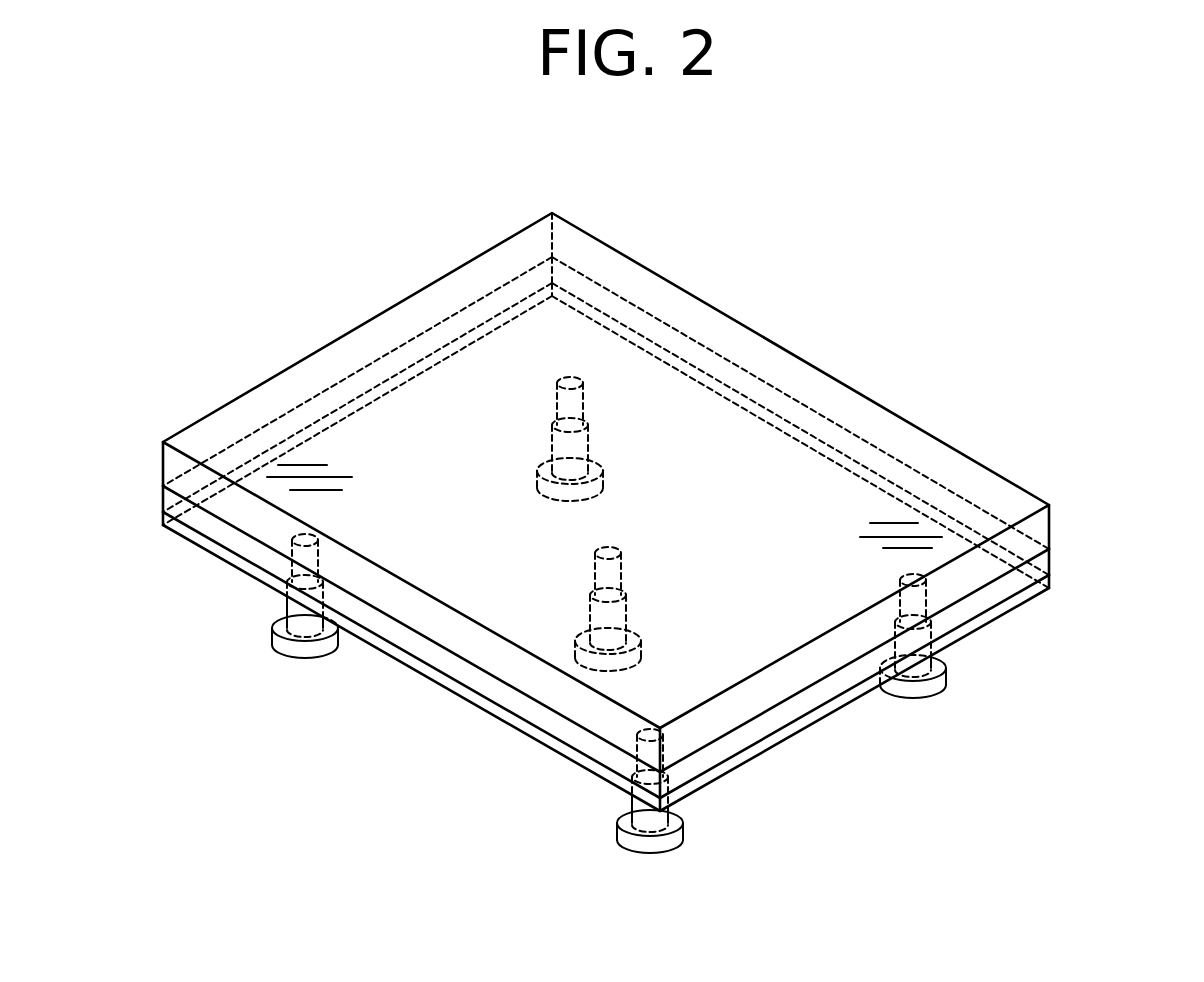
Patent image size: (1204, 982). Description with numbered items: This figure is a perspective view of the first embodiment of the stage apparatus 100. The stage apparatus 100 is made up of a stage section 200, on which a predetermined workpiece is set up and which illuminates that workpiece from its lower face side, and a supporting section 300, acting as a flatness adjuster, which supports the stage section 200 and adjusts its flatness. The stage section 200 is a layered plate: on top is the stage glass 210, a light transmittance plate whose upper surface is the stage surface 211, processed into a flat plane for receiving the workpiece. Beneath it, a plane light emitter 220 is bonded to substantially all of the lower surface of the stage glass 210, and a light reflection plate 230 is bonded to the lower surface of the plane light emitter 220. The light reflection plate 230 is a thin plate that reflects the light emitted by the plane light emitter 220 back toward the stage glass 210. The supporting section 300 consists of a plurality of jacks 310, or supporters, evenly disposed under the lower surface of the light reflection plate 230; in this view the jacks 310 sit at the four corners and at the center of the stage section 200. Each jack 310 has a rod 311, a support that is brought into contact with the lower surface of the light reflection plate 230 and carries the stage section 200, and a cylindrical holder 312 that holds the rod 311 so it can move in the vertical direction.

The stage apparatus 100 is at (1050, 344).
The stage section 200 is at (1082, 534).
The stage glass 210 is at (1050, 524).
The stage surface 211 is at (992, 487).
The plane light emitter 220 is at (1051, 560).
The light reflection plate 230 is at (1044, 594).
The supporting section 300 is at (966, 678).
The jack 310 is at (286, 684).
The rod 311 is at (633, 779).
The cylindrical holder 312 is at (619, 840).